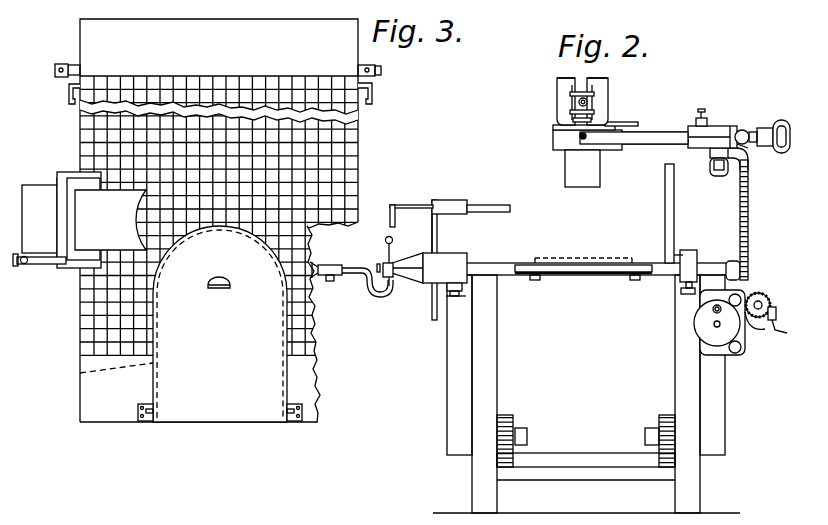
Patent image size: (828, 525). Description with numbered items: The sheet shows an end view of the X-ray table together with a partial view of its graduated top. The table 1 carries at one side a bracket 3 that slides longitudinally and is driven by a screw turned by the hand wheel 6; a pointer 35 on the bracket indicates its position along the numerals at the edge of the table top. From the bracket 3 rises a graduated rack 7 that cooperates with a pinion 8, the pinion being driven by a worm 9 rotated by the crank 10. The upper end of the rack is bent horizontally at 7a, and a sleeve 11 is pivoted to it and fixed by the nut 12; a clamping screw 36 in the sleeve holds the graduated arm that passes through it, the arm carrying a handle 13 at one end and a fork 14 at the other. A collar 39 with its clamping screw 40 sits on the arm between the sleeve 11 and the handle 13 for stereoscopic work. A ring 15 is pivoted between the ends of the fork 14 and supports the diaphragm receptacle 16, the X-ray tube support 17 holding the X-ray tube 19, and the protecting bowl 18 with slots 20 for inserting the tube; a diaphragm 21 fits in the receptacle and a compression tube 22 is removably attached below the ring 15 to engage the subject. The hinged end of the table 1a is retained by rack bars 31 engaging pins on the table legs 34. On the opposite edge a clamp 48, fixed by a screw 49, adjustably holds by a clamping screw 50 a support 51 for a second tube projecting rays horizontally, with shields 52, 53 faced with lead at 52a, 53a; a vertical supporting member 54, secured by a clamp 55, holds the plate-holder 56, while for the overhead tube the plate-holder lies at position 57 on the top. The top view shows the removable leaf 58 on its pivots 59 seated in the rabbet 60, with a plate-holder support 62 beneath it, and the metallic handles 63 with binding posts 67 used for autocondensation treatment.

In FIG. 3, the table 1 is at (110, 415).
In FIG. 2, the table 1 is at (501, 278).
In FIG. 2, the right-hand end of the table 1a is at (455, 408).
In FIG. 2, the bracket 3 is at (760, 330).
In FIG. 2, the hand wheel 6 is at (713, 311).
In FIG. 2, the rack 7 is at (749, 197).
In FIG. 2, the horizontal portion of the rack 7a is at (710, 153).
In FIG. 2, the pinion 8 is at (766, 293).
In FIG. 2, the worm 9 is at (774, 309).
In FIG. 2, the crank 10 is at (778, 334).
In FIG. 2, the sleeve 11 is at (722, 130).
In FIG. 2, the nut 12 is at (668, 132).
In FIG. 2, the handle 13 is at (778, 122).
In FIG. 2, the fork 14 is at (613, 136).
In FIG. 2, the ring 15 is at (553, 139).
In FIG. 2, the diaphragm receptacle 16 is at (553, 127).
In FIG. 2, the X-ray tube support 17 is at (572, 107).
In FIG. 2, the protecting bowl 18 is at (608, 96).
In FIG. 2, the X-ray tube 19 is at (594, 90).
In FIG. 2, the slots 20 is at (579, 82).
In FIG. 2, the diaphragm 21 is at (633, 123).
In FIG. 2, the compression tube 22 is at (566, 170).
In FIG. 2, the rack bars 31 is at (503, 430).
In FIG. 2, the table legs 34 is at (678, 383).
In FIG. 2, the pointer 35 is at (741, 266).
In FIG. 2, the clamping screw 36 is at (701, 113).
In FIG. 2, the collar 39 is at (749, 148).
In FIG. 2, the clamping screw 40 is at (744, 131).
In FIG. 3, the clamp 48 is at (62, 270).
In FIG. 2, the clamp 48 is at (430, 282).
In FIG. 2, the screw 49 is at (452, 298).
In FIG. 3, the clamping screw 50 is at (18, 268).
In FIG. 2, the clamping screw 50 is at (381, 266).
In FIG. 2, the support 51 is at (350, 276).
In FIG. 2, the shield 52 is at (422, 206).
In FIG. 3, the sheet lead facing 52a is at (38, 194).
In FIG. 2, the sheet lead facing 52a is at (394, 204).
In FIG. 3, the shield 53 is at (66, 268).
In FIG. 2, the shield 53 is at (438, 241).
In FIG. 3, the sheet lead facing 53a is at (76, 189).
In FIG. 2, the sheet lead facing 53a is at (430, 249).
In FIG. 2, the vertical supporting member 54 is at (672, 262).
In FIG. 2, the clamp 55 is at (690, 252).
In FIG. 2, the plate-holder 56 is at (665, 205).
In FIG. 2, the plate-holder position 57 is at (570, 258).
In FIG. 3, the removable leaf 58 is at (218, 405).
In FIG. 2, the removable leaf 58 is at (567, 275).
In FIG. 3, the pivots 59 is at (150, 422).
In FIG. 3, the rabbet 60 is at (80, 373).
In FIG. 2, the plate-holder support 62 is at (527, 281).
In FIG. 3, the handles 63 is at (68, 100).
In FIG. 3, the binding post 67 is at (62, 64).